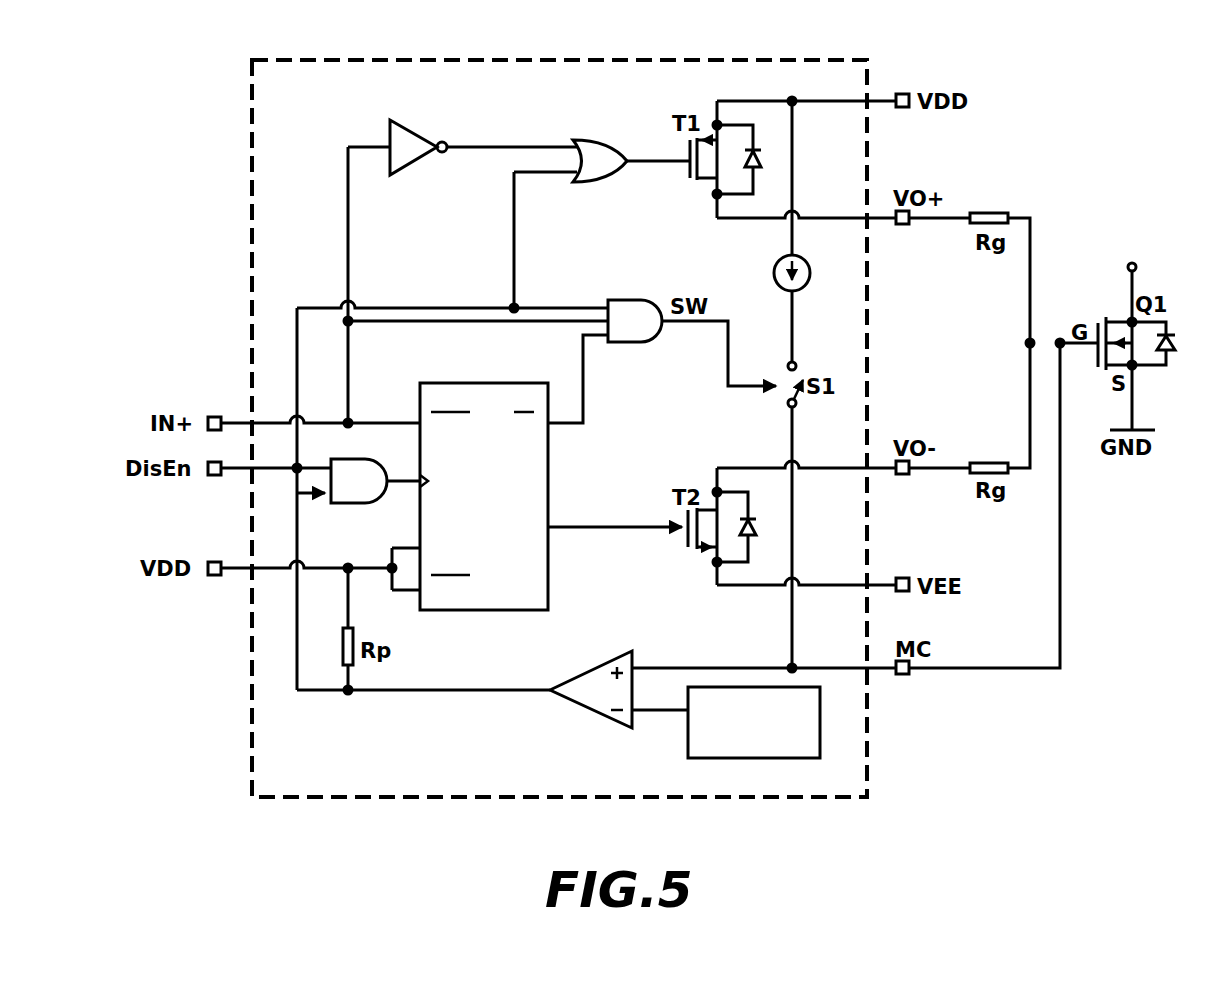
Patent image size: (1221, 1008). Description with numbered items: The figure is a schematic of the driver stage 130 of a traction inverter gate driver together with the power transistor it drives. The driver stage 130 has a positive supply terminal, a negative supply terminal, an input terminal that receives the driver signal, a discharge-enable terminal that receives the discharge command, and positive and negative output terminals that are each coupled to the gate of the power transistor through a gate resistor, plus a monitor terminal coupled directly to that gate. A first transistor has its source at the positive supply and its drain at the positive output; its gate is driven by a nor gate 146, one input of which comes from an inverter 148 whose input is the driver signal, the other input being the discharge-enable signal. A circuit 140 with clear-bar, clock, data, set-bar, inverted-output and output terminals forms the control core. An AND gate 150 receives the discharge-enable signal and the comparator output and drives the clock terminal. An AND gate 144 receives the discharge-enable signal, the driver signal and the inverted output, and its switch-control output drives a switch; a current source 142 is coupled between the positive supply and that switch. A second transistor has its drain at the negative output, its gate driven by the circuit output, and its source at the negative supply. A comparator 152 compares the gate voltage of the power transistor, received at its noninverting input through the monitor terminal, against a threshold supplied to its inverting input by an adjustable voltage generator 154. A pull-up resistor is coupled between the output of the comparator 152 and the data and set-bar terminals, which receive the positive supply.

The driver stage 130 is at (318, 59).
The circuit 140 is at (470, 383).
The current source 142 is at (774, 273).
The AND gate 144 is at (656, 335).
The nor gate 146 is at (598, 140).
The inverter 148 is at (416, 129).
The AND gate 150 is at (380, 496).
The comparator 152 is at (592, 711).
The adjustable voltage generator 154 is at (688, 738).